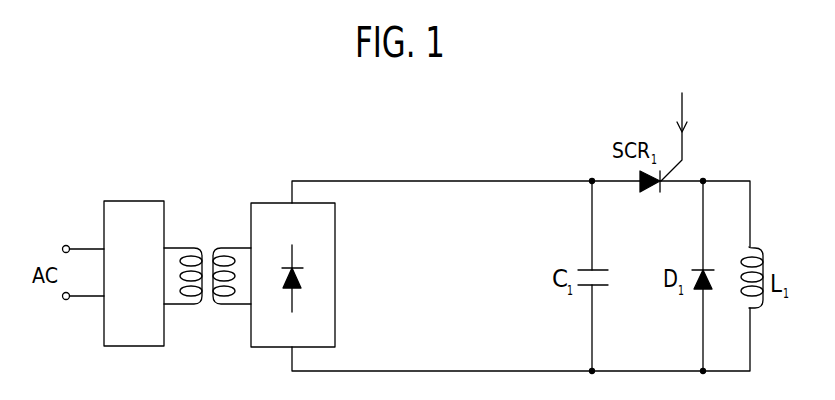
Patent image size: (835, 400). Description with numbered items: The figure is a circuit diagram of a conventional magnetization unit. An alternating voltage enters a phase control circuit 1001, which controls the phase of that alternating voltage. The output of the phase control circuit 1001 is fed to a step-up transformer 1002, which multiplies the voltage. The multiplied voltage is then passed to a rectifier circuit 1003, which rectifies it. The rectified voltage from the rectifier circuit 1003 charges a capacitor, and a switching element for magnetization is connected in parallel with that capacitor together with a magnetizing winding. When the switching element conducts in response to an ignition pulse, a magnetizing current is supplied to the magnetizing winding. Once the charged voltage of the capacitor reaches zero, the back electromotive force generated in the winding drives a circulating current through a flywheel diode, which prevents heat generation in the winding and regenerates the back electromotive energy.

The phase control circuit 1001 is at (132, 201).
The step-up transformer 1002 is at (192, 304).
The rectifier circuit 1003 is at (335, 290).